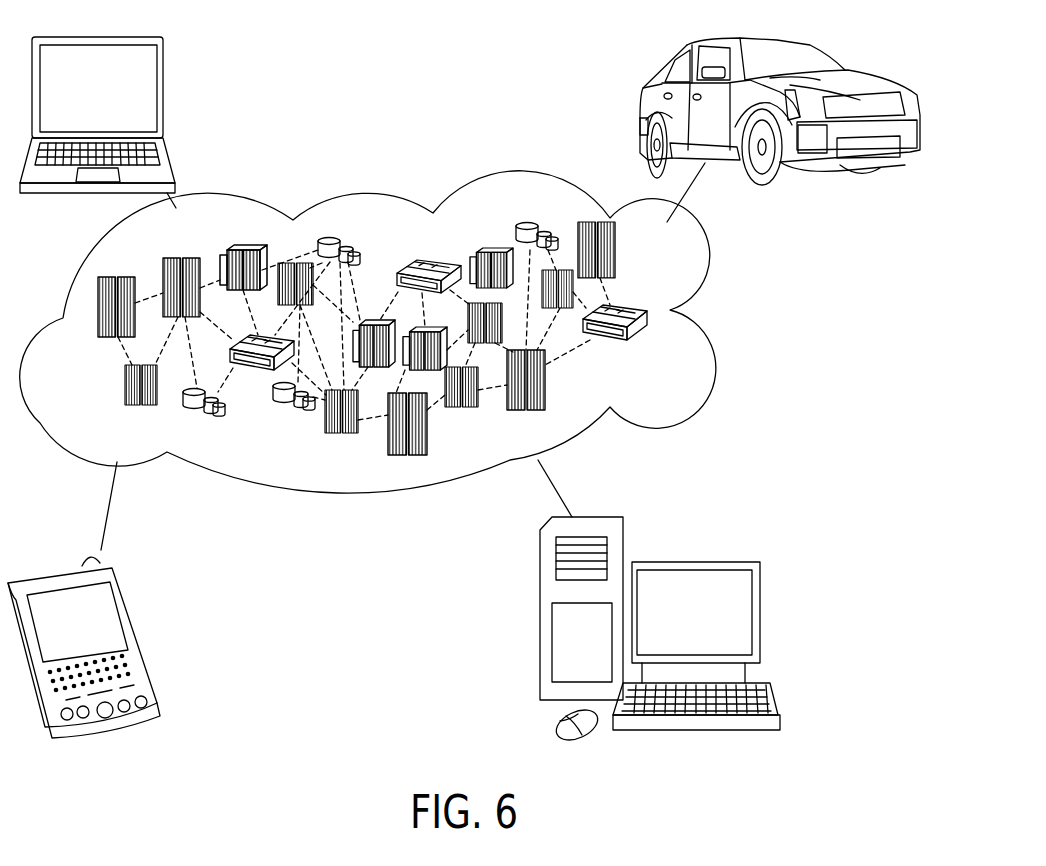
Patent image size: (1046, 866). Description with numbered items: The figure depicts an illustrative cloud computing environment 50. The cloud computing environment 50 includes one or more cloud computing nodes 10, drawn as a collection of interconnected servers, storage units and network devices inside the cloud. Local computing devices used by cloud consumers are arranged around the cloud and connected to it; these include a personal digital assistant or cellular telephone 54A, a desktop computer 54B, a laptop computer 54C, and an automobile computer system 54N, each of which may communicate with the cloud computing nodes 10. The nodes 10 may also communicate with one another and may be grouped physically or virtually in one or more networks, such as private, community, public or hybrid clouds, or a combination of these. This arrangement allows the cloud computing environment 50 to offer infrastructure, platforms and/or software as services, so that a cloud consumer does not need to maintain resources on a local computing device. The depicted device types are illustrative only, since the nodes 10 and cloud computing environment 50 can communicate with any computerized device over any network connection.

The cloud computing nodes 10 is at (397, 332).
The cloud computing environment 50 is at (710, 260).
The personal digital assistant or cellular telephone 54A is at (133, 610).
The desktop computer 54B is at (760, 612).
The laptop computer 54C is at (163, 93).
The automobile computer system 54N is at (827, 62).